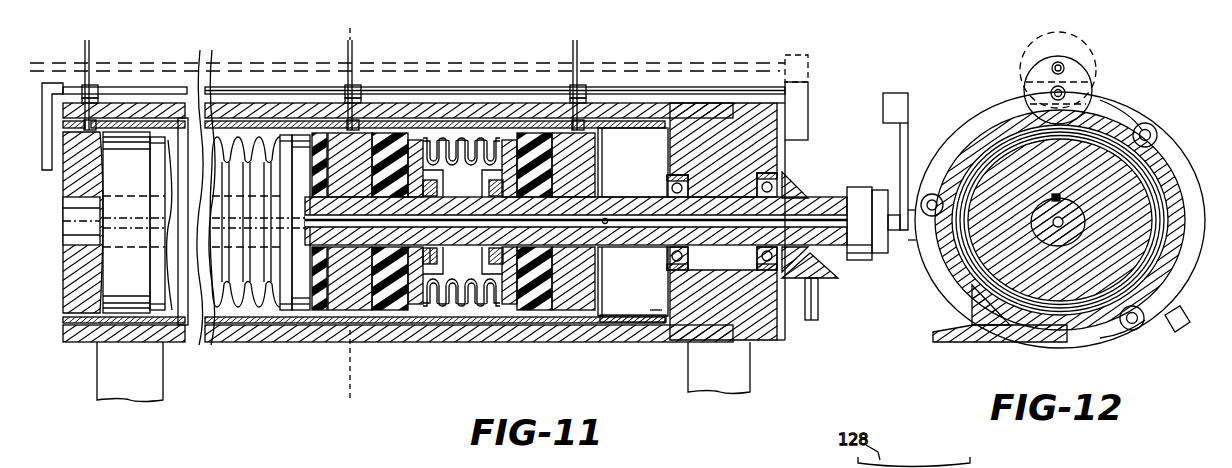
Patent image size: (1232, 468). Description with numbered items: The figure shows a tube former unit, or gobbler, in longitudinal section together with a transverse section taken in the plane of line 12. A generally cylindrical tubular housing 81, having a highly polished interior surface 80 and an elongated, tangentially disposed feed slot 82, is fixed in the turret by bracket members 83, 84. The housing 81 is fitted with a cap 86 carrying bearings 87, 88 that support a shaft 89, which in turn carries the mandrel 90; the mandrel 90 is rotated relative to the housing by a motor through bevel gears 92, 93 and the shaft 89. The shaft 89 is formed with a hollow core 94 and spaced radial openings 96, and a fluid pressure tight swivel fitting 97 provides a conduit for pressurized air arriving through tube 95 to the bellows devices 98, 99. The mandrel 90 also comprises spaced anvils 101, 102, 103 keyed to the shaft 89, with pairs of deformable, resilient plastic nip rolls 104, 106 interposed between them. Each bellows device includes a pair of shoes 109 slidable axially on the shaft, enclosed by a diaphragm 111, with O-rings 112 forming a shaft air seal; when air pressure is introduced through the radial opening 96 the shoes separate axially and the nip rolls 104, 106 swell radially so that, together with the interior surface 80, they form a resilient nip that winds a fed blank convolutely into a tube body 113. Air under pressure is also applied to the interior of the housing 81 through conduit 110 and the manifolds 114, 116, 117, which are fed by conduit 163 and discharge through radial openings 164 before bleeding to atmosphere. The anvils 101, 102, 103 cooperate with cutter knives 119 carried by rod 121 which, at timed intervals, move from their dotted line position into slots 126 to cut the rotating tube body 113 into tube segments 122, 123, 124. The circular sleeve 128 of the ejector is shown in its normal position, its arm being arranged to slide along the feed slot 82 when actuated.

In FIG. 11, the section line 12 is at (356, 40).
In FIG. 11, the interior surface 80 is at (310, 266).
In FIG. 11, the tubular housing 81 is at (398, 238).
In FIG. 12, the feed slot 82 is at (1051, 226).
In FIG. 11, the bracket member 83 is at (110, 379).
In FIG. 11, the bracket member 84 is at (741, 368).
In FIG. 11, the cap 86 is at (744, 230).
In FIG. 11, the bearing 87 is at (656, 211).
In FIG. 11, the bearing 88 is at (788, 205).
In FIG. 11, the shaft 89 is at (626, 249).
In FIG. 11, the mandrel 90 is at (252, 275).
In FIG. 11, the bevel gear 92 is at (820, 286).
In FIG. 11, the bevel gear 93 is at (813, 220).
In FIG. 11, the hollow core 94 is at (576, 248).
In FIG. 12, the tube 95 is at (885, 161).
In FIG. 11, the radial opening 96 is at (462, 218).
In FIG. 11, the swivel fitting 97 is at (873, 244).
In FIG. 11, the bellows device 98 is at (475, 274).
In FIG. 11, the bellows device 99 is at (293, 255).
In FIG. 11, the anvil 101 is at (599, 249).
In FIG. 11, the anvil 102 is at (351, 278).
In FIG. 11, the anvil 103 is at (65, 251).
In FIG. 11, the nip roll 104 is at (463, 255).
In FIG. 11, the nip roll 106 is at (364, 191).
In FIG. 11, the shoe 109 is at (461, 186).
In FIG. 12, the conduit 110 is at (1060, 206).
In FIG. 11, the diaphragm 111 is at (365, 267).
In FIG. 11, the O-ring 112 is at (458, 310).
In FIG. 11, the tube body 113 is at (389, 216).
In FIG. 12, the tube body 113 is at (1058, 282).
In FIG. 12, the manifold 114 is at (911, 243).
In FIG. 12, the manifold 116 is at (1122, 94).
In FIG. 12, the manifold 117 is at (1139, 343).
In FIG. 11, the cutter knife 119 is at (334, 78).
In FIG. 12, the cutter knife 119 is at (1025, 52).
In FIG. 11, the rod 121 is at (424, 62).
In FIG. 11, the tube segment 122 is at (450, 184).
In FIG. 11, the tube segment 123 is at (259, 187).
In FIG. 11, the tube segment 124 is at (138, 178).
In FIG. 11, the slot 126 is at (333, 74).
In FIG. 12, the slot 126 is at (1006, 95).
In FIG. 11, the circular sleeve 128 is at (669, 345).
In FIG. 12, the conduit 163 is at (1192, 312).
In FIG. 12, the radial opening 164 is at (1060, 230).